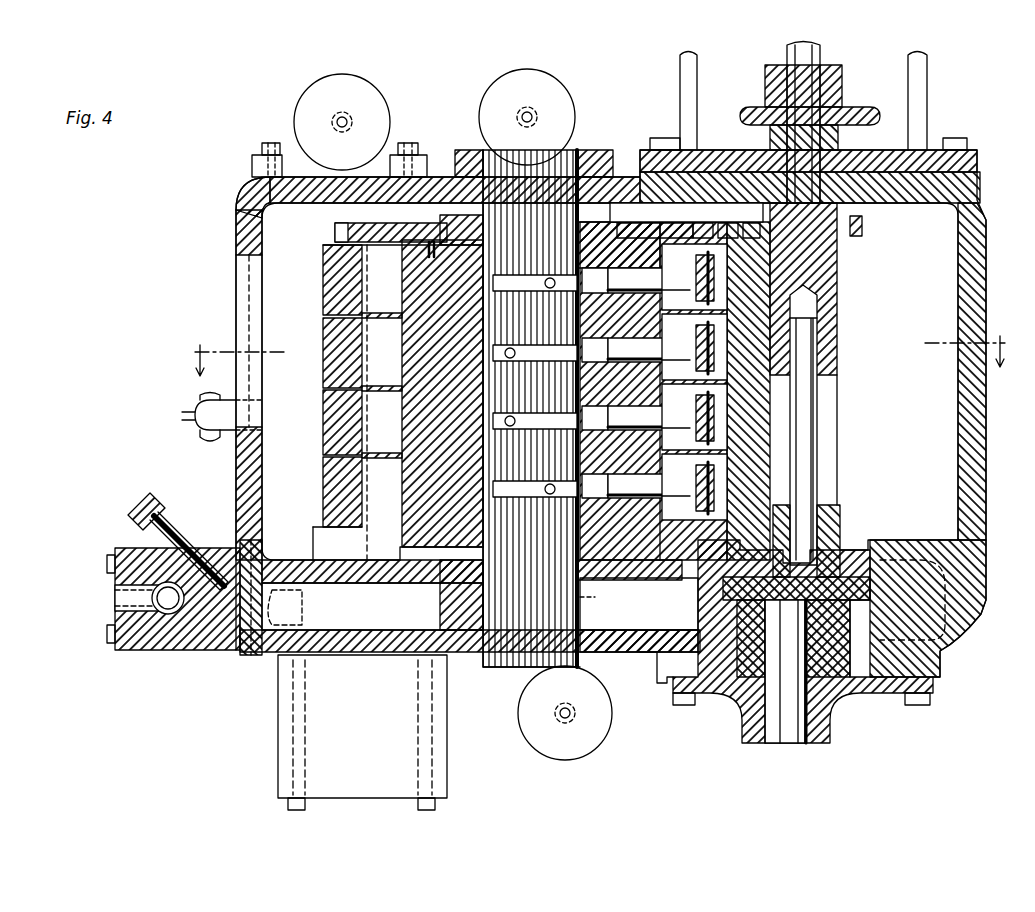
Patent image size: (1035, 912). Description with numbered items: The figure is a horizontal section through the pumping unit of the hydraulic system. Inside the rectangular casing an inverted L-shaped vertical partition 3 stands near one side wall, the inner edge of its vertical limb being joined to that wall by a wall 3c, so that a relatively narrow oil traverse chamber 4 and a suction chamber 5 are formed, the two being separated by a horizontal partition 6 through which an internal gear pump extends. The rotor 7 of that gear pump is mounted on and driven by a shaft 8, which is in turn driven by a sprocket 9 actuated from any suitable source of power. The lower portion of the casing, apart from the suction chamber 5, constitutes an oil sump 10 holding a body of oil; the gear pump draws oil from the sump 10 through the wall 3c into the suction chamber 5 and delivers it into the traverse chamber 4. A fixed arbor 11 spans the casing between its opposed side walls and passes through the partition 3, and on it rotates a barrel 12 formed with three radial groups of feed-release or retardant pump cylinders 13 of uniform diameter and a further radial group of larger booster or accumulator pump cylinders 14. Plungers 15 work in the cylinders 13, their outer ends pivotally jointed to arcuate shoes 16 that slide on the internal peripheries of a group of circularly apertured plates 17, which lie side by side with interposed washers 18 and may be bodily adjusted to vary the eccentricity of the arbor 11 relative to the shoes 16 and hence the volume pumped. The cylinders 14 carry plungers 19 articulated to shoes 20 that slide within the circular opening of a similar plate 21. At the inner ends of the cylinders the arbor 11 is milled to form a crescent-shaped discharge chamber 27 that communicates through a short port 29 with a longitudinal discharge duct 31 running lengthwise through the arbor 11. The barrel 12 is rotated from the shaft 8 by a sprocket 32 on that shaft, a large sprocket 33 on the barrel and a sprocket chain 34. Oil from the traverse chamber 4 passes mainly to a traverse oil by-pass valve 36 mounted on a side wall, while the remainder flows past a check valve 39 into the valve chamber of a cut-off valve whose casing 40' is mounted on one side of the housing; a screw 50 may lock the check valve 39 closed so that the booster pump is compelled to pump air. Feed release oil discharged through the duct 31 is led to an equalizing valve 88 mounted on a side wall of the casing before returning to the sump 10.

The inverted L-shaped vertical partition 3 is at (462, 575).
The wall 3c is at (700, 609).
The oil traverse chamber 4 is at (372, 606).
The suction chamber 5 is at (597, 356).
The horizontal partition 6 is at (908, 555).
The rotor 7 is at (846, 577).
The shaft 8 is at (820, 440).
The sprocket 9 is at (862, 118).
The oil sump 10 is at (897, 451).
The fixed arbor 11 is at (598, 596).
The barrel 12 is at (402, 538).
The feed-release or retardant pump cylinders 13 is at (595, 349).
The booster or accumulator pump cylinders 14 is at (595, 486).
The plungers 15 is at (649, 348).
The arcuate shoes 16 is at (706, 258).
The circularly apertured plates 17 is at (322, 265).
The washers 18 is at (380, 312).
The plungers 19 is at (649, 485).
The shoes 20 is at (708, 466).
The plate 21 is at (335, 490).
The discharge chamber 27 is at (492, 283).
The short port 29 is at (512, 412).
The longitudinal discharge duct 31 is at (492, 238).
The sprocket 32 is at (862, 230).
The large sprocket 33 is at (335, 232).
The sprocket chain 34 is at (686, 220).
The traverse oil by-pass valve 36 is at (362, 732).
The check valve 39 is at (248, 652).
The cut-off valve casing 40' is at (173, 612).
The screw 50 is at (175, 535).
The equalizing valve 88 is at (349, 83).